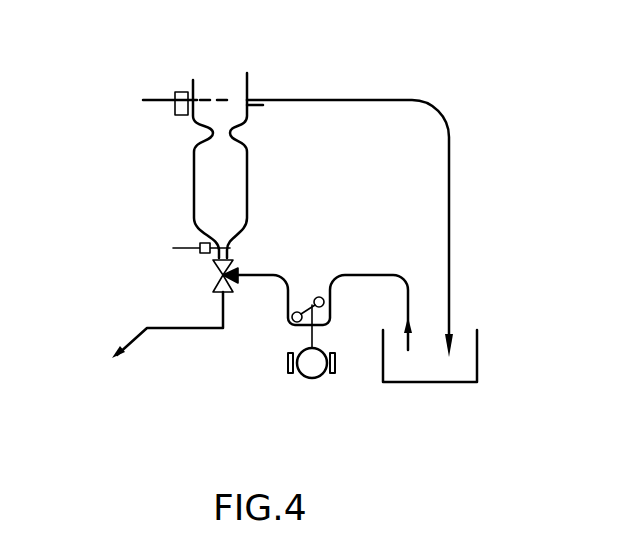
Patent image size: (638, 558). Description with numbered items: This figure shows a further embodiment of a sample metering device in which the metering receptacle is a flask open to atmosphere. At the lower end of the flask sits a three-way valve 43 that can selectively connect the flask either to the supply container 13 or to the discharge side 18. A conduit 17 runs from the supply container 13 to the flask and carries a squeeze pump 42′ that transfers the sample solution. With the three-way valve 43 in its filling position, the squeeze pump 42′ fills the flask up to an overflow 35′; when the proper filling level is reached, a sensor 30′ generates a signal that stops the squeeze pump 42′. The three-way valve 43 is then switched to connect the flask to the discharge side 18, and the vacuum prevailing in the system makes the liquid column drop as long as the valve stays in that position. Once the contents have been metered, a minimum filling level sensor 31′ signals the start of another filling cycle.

The sensor 30′ is at (180, 93).
The overflow 35′ is at (251, 97).
The minimum filling level sensor 31′ is at (200, 246).
The three-way valve 43 is at (204, 280).
The conduit 17 is at (273, 275).
The discharge side 18 is at (166, 338).
The supply container 13 is at (478, 360).
The squeeze pump 42′ is at (331, 391).